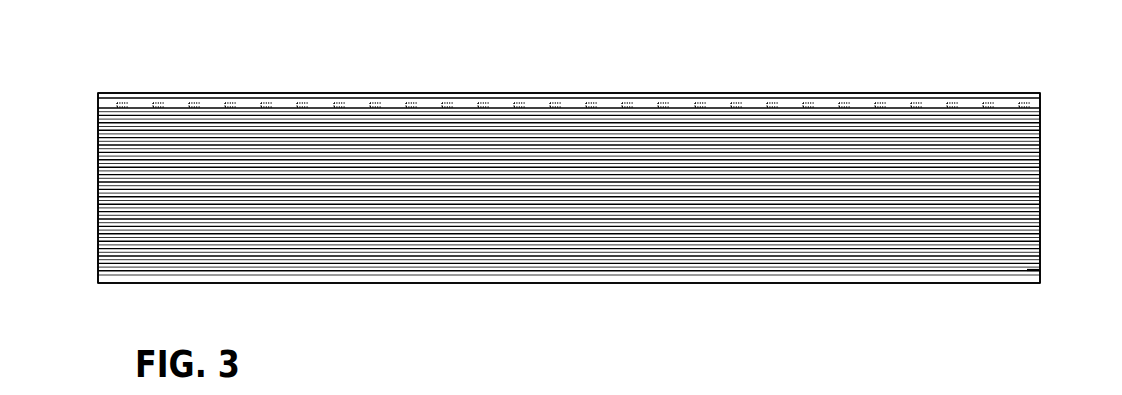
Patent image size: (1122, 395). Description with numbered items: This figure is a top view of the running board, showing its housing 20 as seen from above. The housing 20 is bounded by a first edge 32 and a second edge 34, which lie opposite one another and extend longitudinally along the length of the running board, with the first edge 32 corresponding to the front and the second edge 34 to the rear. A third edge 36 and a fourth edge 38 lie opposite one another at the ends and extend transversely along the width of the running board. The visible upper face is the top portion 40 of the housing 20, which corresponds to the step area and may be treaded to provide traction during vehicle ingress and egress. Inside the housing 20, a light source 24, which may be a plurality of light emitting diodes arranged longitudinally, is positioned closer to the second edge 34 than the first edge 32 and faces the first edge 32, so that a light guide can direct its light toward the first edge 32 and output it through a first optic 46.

The housing 20 is at (907, 70).
The light source 24 is at (122, 100).
The first edge 32 is at (692, 283).
The second edge 34 is at (755, 93).
The third edge 36 is at (98, 217).
The fourth edge 38 is at (1040, 177).
The top portion 40 is at (587, 183).
The first optic 46 is at (1040, 269).